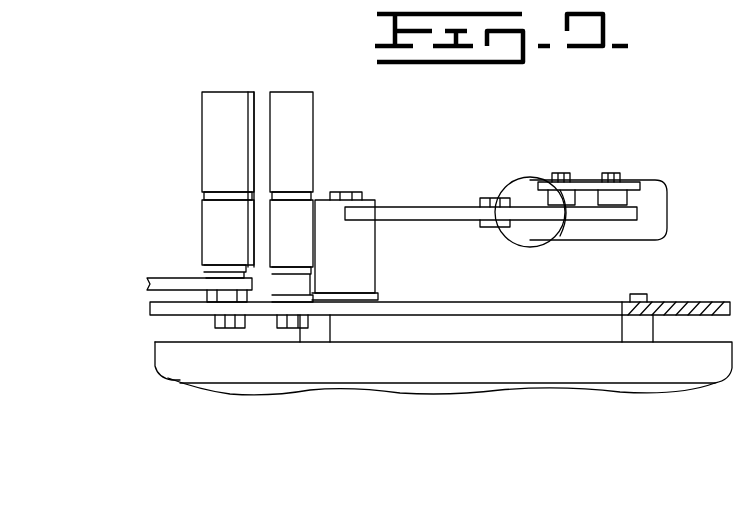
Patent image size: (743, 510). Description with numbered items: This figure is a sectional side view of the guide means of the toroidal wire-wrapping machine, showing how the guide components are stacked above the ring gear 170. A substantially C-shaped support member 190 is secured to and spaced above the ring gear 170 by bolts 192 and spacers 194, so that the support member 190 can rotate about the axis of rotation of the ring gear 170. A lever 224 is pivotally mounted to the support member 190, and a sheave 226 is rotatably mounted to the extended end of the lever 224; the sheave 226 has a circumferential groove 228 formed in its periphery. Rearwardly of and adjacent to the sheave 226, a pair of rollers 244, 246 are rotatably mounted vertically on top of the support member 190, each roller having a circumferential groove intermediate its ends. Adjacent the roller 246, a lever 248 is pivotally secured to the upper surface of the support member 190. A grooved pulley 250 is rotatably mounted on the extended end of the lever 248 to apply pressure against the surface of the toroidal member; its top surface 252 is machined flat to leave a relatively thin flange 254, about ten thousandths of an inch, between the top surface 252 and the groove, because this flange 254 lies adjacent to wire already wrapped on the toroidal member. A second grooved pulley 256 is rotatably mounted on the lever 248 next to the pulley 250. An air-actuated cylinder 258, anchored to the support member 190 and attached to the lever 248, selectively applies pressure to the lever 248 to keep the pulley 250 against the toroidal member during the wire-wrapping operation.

The ring gear 170 is at (155, 355).
The support member 190 is at (448, 303).
The bolts 192 is at (640, 293).
The spacers 194 is at (318, 333).
The lever 224 is at (172, 282).
The sheave 226 is at (208, 120).
The circumferential groove 228 is at (205, 196).
The roller 244 is at (257, 92).
The roller 246 is at (310, 106).
The lever 248 is at (402, 210).
The pulley 250 is at (588, 183).
The top surface 252 is at (622, 182).
The flange 254 is at (637, 185).
The second pulley 256 is at (545, 183).
The air-actuated cylinder 258 is at (585, 240).